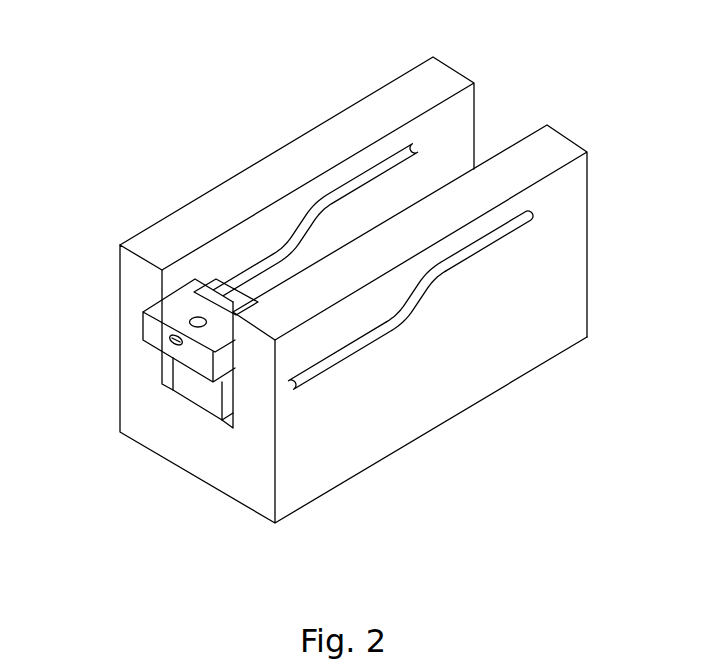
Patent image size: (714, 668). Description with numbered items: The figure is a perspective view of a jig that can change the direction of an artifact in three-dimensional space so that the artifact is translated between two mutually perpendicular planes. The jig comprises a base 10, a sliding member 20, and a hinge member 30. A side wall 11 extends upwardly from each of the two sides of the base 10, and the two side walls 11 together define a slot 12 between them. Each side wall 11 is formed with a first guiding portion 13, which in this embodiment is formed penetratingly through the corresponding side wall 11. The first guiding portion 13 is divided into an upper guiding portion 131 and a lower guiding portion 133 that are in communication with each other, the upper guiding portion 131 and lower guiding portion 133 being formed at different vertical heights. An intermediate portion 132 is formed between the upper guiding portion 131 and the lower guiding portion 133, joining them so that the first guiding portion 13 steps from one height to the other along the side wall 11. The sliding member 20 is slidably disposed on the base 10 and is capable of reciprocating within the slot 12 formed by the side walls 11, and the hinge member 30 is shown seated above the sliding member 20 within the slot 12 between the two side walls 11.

The base 10 is at (198, 455).
The side wall 11 is at (395, 82).
The slot 12 is at (492, 128).
The first guiding portion 13 is at (381, 338).
The upper guiding portion 131 is at (477, 247).
The intermediate portion 132 is at (412, 300).
The lower guiding portion 133 is at (328, 363).
The sliding member 20 is at (190, 385).
The hinge member 30 is at (150, 328).